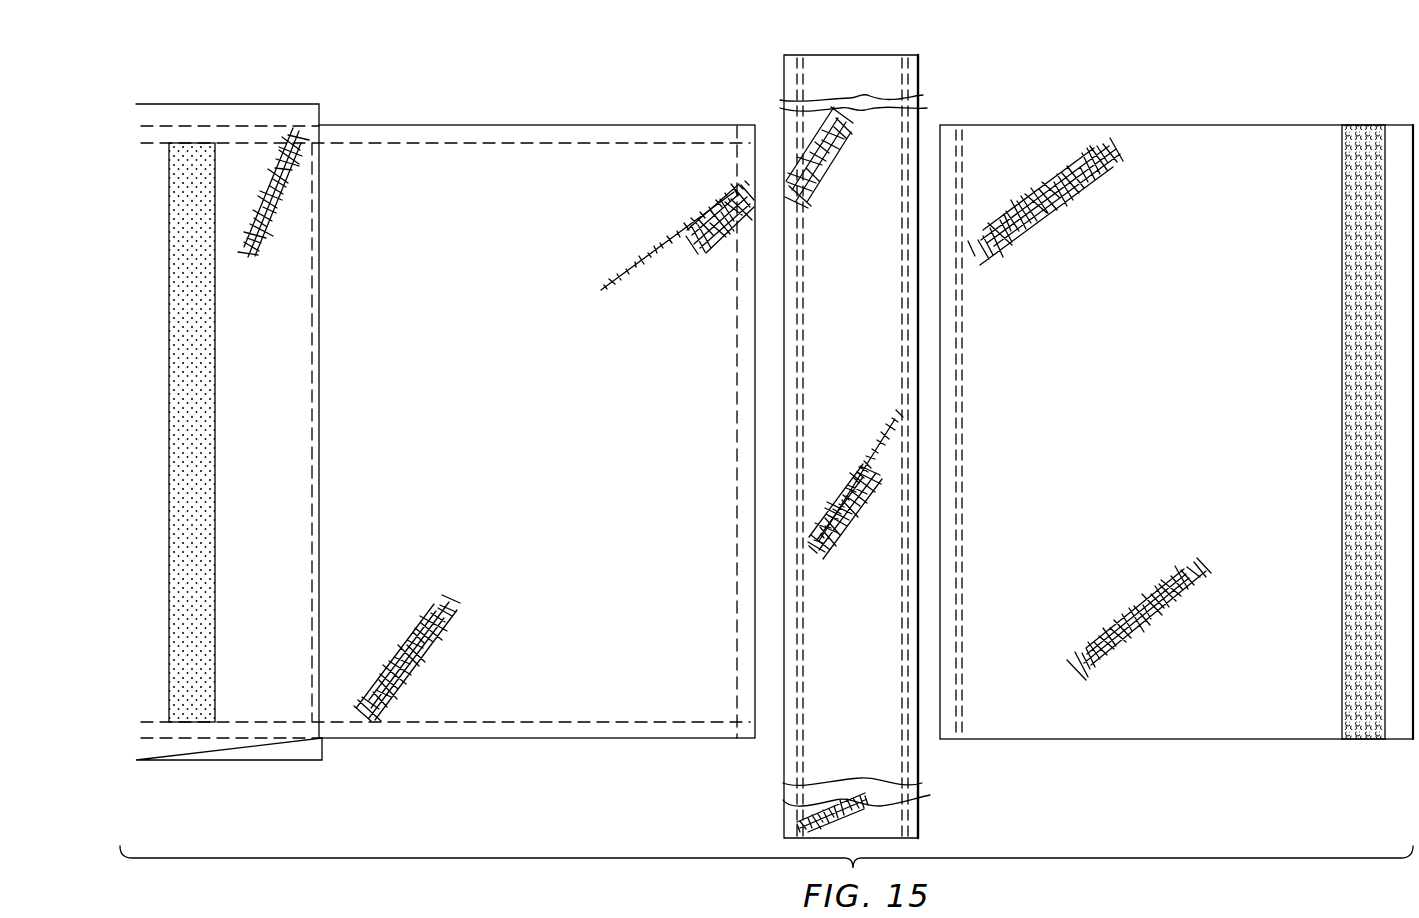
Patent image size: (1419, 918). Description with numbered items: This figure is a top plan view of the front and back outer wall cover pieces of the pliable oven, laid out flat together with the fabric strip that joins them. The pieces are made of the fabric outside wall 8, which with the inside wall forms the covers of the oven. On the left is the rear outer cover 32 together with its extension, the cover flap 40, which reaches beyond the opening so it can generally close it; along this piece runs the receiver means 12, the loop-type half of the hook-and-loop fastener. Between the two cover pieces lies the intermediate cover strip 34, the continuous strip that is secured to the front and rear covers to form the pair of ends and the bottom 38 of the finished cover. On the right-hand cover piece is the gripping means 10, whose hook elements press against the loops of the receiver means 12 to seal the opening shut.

The outside wall 8 is at (572, 510).
The gripping means 10 is at (1355, 622).
The receiver means 12 is at (196, 510).
The rear outer cover 32 is at (890, 68).
The intermediate cover strip 34 is at (885, 760).
The bottom 38 is at (881, 143).
The cover flap 40 is at (165, 727).